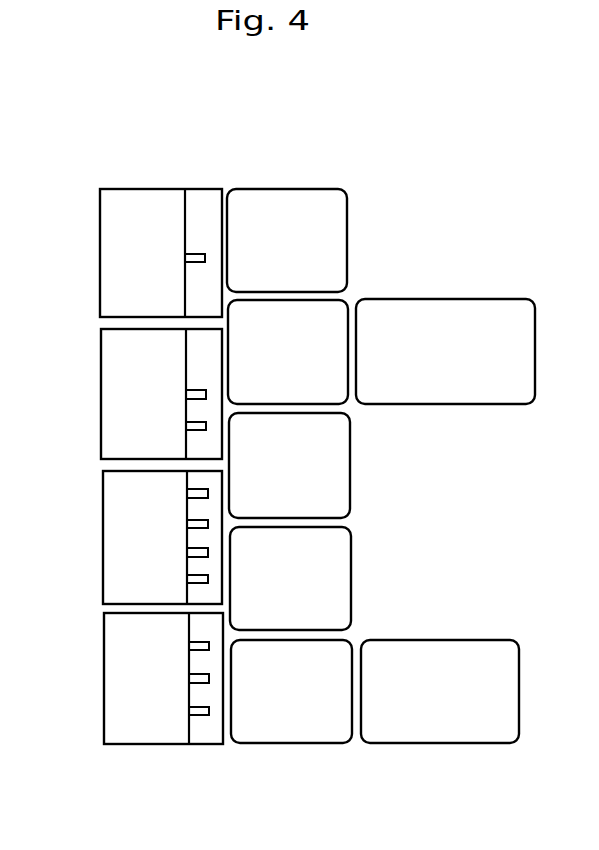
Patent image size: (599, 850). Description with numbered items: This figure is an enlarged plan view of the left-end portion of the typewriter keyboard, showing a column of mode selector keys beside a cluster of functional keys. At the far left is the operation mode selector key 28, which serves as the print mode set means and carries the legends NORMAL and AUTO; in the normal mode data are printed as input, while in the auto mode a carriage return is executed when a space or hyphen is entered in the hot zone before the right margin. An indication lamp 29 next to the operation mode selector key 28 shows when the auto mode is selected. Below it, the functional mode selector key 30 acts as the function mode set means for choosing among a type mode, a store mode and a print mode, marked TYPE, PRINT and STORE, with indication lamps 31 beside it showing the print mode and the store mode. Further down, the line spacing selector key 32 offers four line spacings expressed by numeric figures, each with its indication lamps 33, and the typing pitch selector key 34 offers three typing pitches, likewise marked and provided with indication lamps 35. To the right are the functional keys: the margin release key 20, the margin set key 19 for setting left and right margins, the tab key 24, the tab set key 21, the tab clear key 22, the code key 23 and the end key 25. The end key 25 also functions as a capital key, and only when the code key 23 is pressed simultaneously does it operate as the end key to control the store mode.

The margin set key 19 is at (347, 305).
The margin release key 20 is at (345, 203).
The tab set key 21 is at (350, 463).
The tab clear key 22 is at (352, 572).
The code key 23 is at (295, 742).
The tab key 24 is at (476, 300).
The end key 25 is at (430, 742).
The operation mode selector key 28 is at (105, 245).
The indication lamp 29 is at (197, 253).
The functional mode selector key 30 is at (106, 376).
The indication lamps 31 is at (206, 427).
The line spacing selector key 32 is at (106, 487).
The indication lamps 33 is at (200, 497).
The typing pitch selector key 34 is at (111, 662).
The indication lamps 35 is at (209, 646).